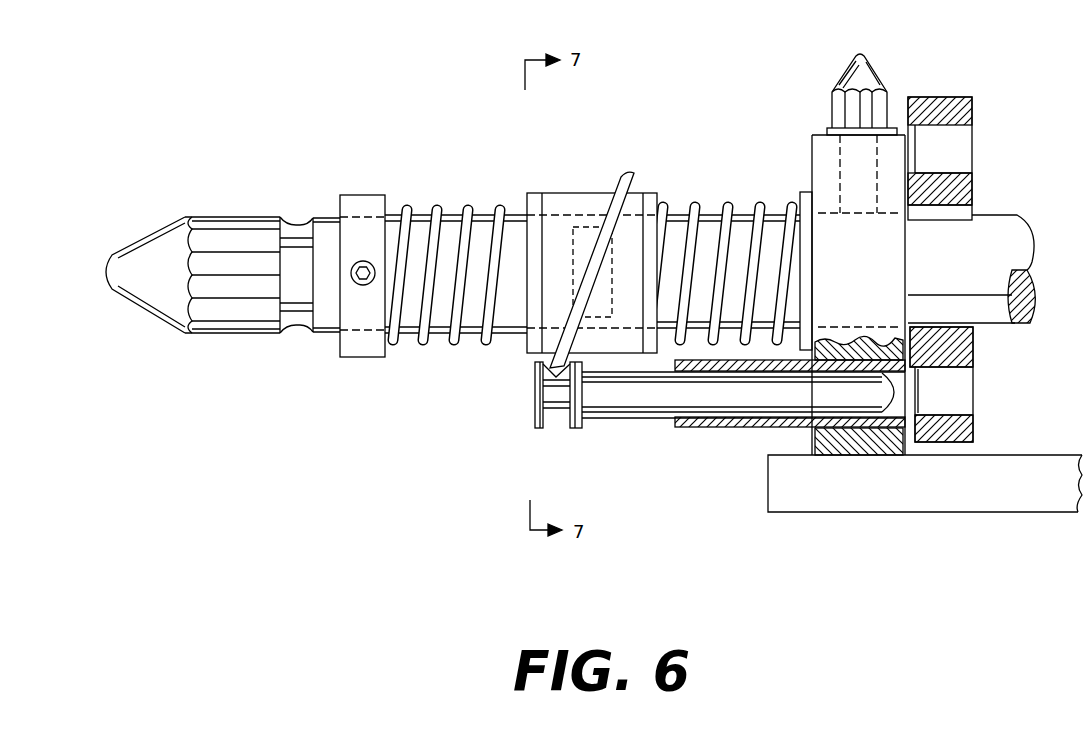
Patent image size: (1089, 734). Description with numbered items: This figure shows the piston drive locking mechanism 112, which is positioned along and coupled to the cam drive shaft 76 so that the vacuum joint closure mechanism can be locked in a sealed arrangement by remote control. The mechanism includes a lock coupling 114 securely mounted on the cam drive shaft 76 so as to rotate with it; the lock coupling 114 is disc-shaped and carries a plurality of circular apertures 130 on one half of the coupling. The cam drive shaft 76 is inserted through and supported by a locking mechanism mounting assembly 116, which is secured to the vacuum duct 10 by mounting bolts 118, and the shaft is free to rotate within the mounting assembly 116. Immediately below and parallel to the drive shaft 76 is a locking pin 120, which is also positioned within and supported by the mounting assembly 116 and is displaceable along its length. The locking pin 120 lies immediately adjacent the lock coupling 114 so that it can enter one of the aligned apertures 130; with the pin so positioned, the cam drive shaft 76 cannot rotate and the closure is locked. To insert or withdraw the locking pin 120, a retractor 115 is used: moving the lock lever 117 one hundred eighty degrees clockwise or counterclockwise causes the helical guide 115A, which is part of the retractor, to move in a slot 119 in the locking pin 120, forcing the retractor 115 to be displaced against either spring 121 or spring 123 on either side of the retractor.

The vacuum duct 10 is at (968, 505).
The cam drive shaft 76 is at (985, 213).
The piston drive locking mechanism 112 is at (724, 180).
The lock coupling 114 is at (957, 96).
The retractor 115 is at (556, 193).
The helical guide 115A is at (629, 173).
The locking mechanism mounting assembly 116 is at (812, 134).
The lock lever 117 is at (589, 240).
The mounting bolts 118 is at (878, 78).
The slot 119 is at (557, 416).
The locking pin 120 is at (620, 418).
The spring 121 is at (447, 340).
The spring 123 is at (701, 207).
The circular apertures 130 is at (975, 377).